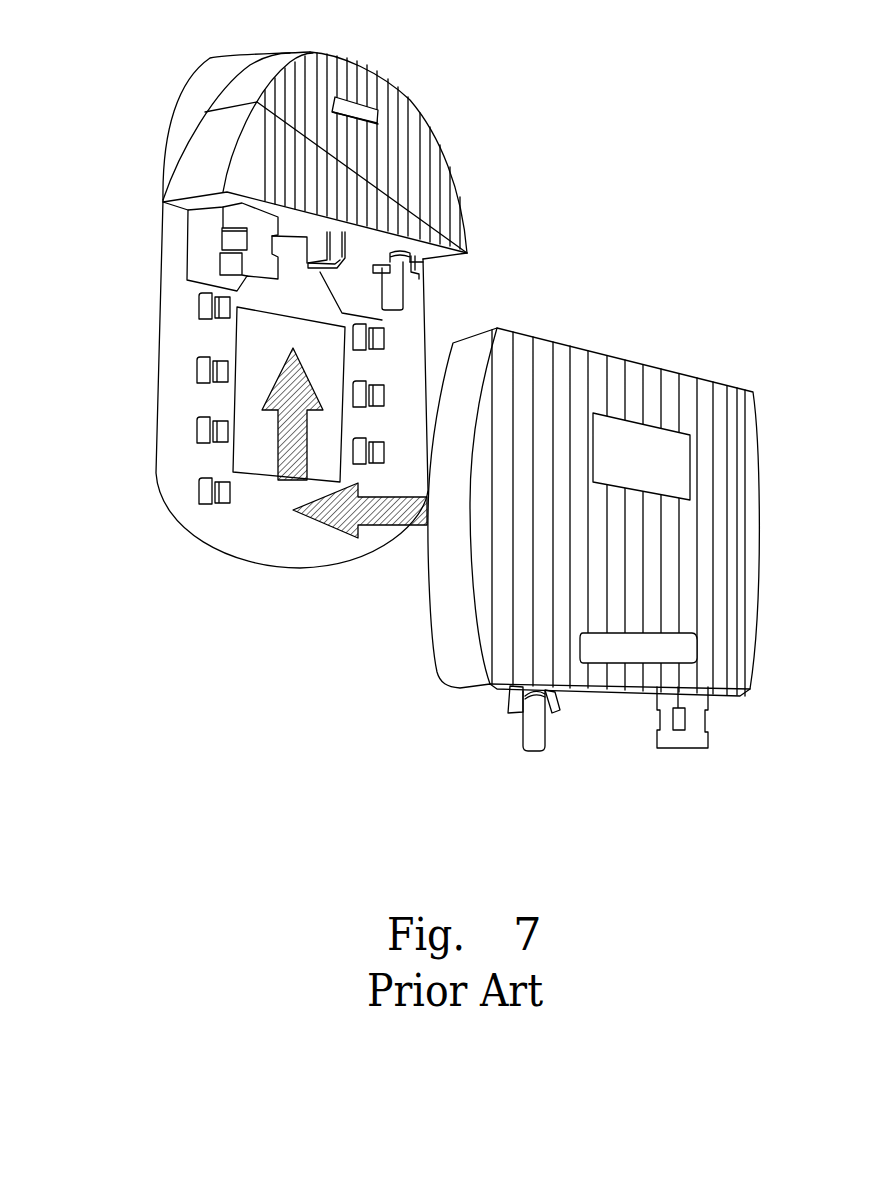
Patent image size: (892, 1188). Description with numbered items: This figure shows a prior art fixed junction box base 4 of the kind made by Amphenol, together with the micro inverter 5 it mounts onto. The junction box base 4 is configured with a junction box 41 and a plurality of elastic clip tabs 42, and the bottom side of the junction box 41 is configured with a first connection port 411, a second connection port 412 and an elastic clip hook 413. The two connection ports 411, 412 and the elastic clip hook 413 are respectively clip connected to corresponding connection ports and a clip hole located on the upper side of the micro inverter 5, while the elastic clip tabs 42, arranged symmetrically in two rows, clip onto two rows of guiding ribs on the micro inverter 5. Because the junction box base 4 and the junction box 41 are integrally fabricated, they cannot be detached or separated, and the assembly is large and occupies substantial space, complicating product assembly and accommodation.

The junction box base 4 is at (146, 112).
The junction box 41 is at (383, 100).
The first connection port 411 is at (252, 263).
The second connection port 412 is at (395, 288).
The elastic clip hook 413 is at (347, 250).
The elastic clip tabs 42 is at (203, 490).
The micro inverter 5 is at (720, 362).